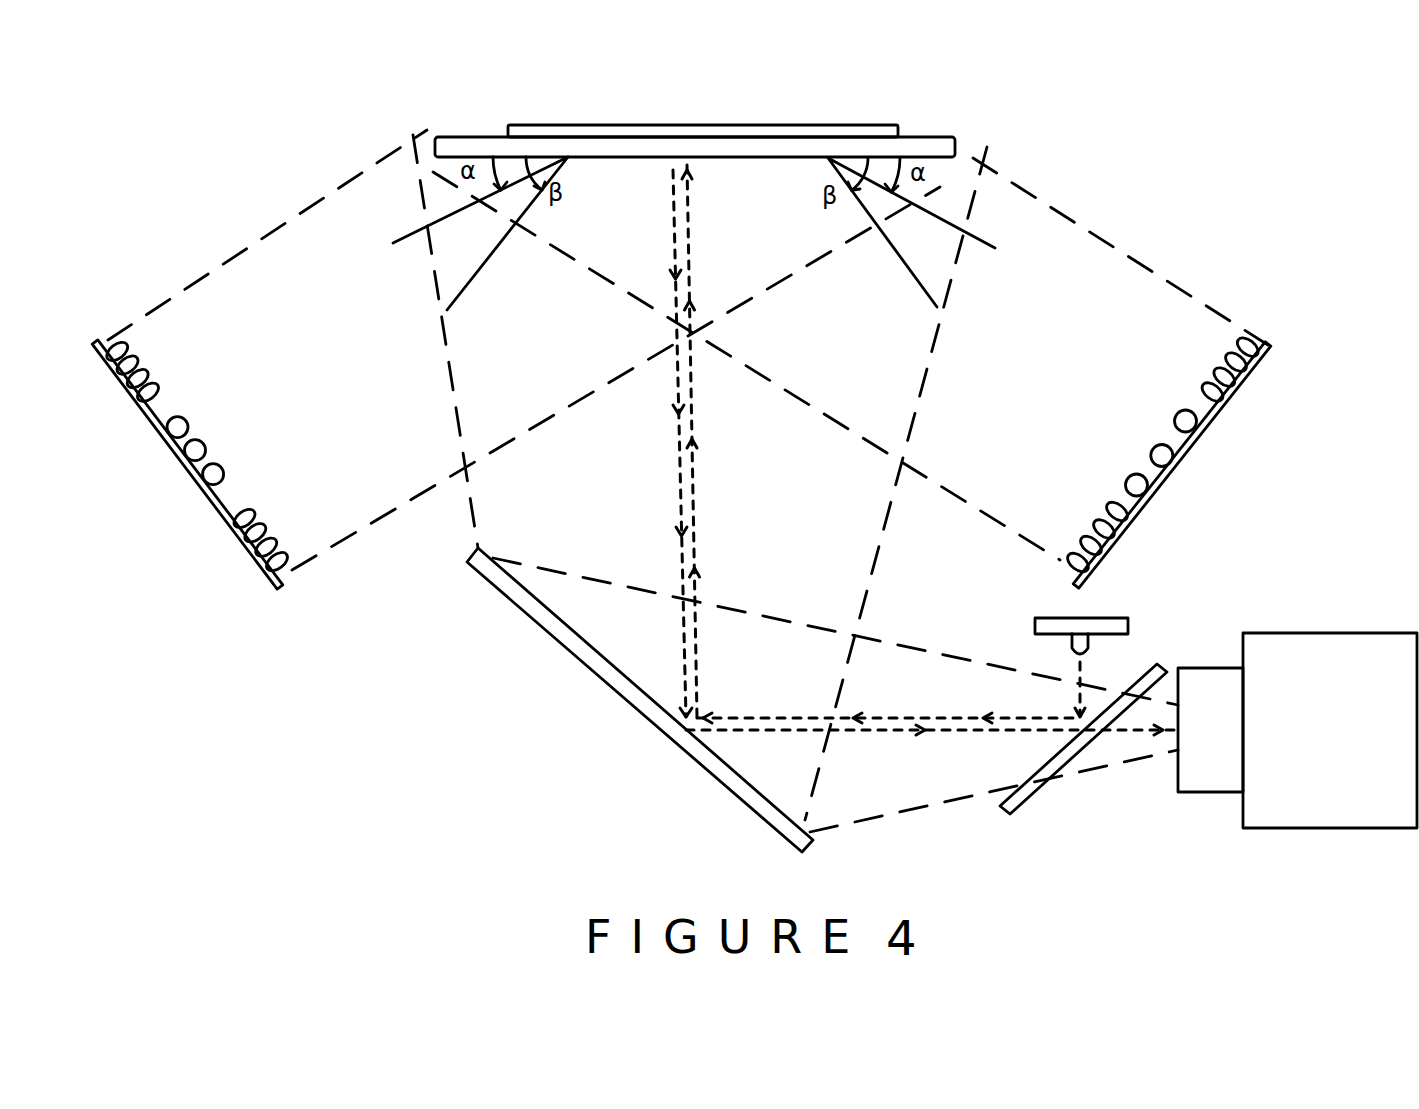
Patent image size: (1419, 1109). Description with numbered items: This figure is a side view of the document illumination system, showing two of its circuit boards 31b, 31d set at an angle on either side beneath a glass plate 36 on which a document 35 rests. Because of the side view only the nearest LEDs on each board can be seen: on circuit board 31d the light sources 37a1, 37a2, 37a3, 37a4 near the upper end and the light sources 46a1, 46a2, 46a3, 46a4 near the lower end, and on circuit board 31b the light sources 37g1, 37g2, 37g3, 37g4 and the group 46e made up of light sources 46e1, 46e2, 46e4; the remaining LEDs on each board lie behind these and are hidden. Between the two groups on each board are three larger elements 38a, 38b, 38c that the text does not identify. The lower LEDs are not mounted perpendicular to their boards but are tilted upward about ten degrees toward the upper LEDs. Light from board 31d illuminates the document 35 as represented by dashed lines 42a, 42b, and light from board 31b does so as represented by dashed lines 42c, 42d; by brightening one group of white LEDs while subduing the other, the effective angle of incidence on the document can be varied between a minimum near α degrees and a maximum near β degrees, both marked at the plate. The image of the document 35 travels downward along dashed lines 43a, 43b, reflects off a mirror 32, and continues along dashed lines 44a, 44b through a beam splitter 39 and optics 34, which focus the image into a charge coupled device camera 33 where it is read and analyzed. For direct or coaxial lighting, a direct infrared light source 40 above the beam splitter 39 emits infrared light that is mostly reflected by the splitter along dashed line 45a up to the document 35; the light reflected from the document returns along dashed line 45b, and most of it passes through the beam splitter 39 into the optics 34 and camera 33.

The circuit board 31b is at (1240, 397).
The circuit board 31d is at (207, 503).
The mirror 32 is at (553, 636).
The charge coupled device (CCD) camera 33 is at (1345, 632).
The optics 34 is at (1207, 800).
The document 35 is at (862, 127).
The glass plate 36 is at (940, 137).
The light source 37a1 is at (125, 350).
The light source 37a2 is at (140, 366).
The light source 37a3 is at (152, 382).
The light source 37a4 is at (160, 398).
The light source 37g1 is at (1235, 338).
The light source 37g2 is at (1224, 354).
The light source 37g3 is at (1210, 372).
The light source 37g4 is at (1200, 392).
The light emitting element 38a is at (188, 421).
The light emitting element 38b is at (213, 442).
The light emitting element 38c is at (230, 476).
The beam splitter 39 is at (1008, 815).
The direct infrared light source 40 is at (1100, 648).
The dashed line 42a is at (290, 215).
The dashed line 42b is at (412, 512).
The dashed line 42c is at (1180, 292).
The dashed line 42d is at (1010, 553).
The dashed line 43a is at (458, 366).
The dashed line 43b is at (930, 356).
The dashed line 44a is at (728, 602).
The dashed line 44b is at (880, 815).
The dashed line 45a is at (697, 468).
The dashed line 45b is at (673, 467).
The light source 46a1 is at (255, 502).
The light source 46a2 is at (265, 520).
The light source 46a3 is at (275, 540).
The light source 46a4 is at (290, 556).
The light sources 46e is at (1085, 540).
The light source 46e1 is at (1110, 508).
The light source 46e2 is at (1097, 525).
The light source 46e4 is at (1080, 560).